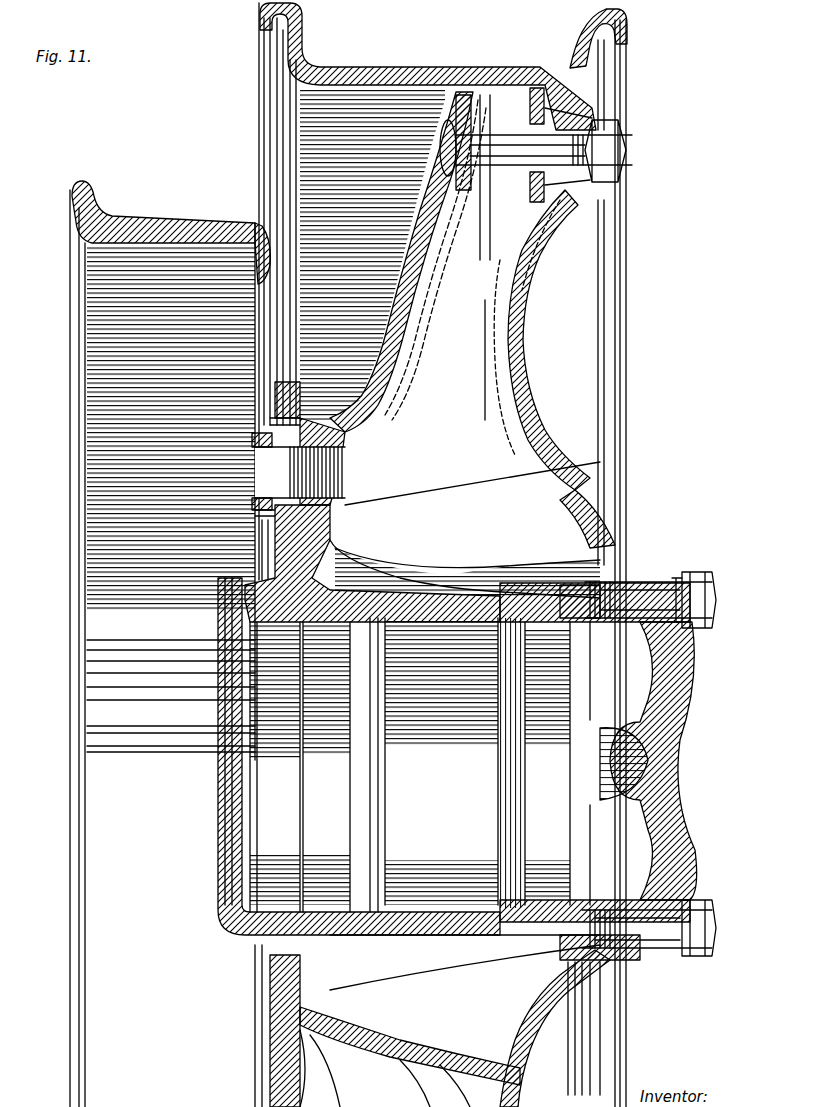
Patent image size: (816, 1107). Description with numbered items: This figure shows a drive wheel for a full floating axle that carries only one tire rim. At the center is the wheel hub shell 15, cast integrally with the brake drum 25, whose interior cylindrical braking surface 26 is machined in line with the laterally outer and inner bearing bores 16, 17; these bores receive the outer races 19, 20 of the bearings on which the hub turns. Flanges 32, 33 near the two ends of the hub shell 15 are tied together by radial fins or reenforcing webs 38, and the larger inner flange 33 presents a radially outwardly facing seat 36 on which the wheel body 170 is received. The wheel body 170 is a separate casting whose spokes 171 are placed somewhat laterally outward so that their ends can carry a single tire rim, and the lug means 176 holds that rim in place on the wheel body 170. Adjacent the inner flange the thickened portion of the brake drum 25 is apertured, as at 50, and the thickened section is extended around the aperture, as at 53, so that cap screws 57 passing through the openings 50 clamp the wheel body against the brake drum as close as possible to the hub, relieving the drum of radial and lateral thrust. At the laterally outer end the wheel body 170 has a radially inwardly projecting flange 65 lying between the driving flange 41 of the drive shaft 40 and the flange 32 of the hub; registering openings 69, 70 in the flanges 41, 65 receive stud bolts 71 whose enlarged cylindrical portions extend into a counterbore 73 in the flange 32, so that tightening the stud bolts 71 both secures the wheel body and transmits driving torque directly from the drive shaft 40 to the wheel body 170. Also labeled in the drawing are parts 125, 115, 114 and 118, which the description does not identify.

The rim 125 is at (436, 70).
The lug means 176 is at (622, 122).
The brake drum 25 is at (140, 220).
The interior cylindrical braking surface 26 is at (100, 250).
The extended thickened section 53 is at (285, 420).
The aperture 50 is at (255, 440).
The cap screws 57 is at (258, 466).
The collar 115 is at (258, 502).
The seat 36 is at (270, 513).
The laterally inner flange 33 is at (265, 527).
The wheel body 170 is at (535, 465).
The spokes 171 is at (565, 475).
The hub flange 114 is at (602, 535).
The counterbore 73 is at (605, 565).
The openings 69 is at (620, 582).
The openings 70 is at (680, 578).
The stud bolts 71 is at (690, 592).
The laterally inner bearing bore 17 is at (350, 595).
The outer race 20 is at (385, 592).
The wheel hub shell 15 is at (440, 578).
The radial fins 38 is at (470, 592).
The outer race 19 is at (520, 620).
The laterally outer bearing bore 16 is at (535, 625).
The flange 32 is at (580, 578).
The radially inwardly projecting flange 65 is at (672, 648).
The driving flange 41 is at (676, 668).
The drive shaft 40 is at (618, 770).
The lower web 118 is at (298, 1040).